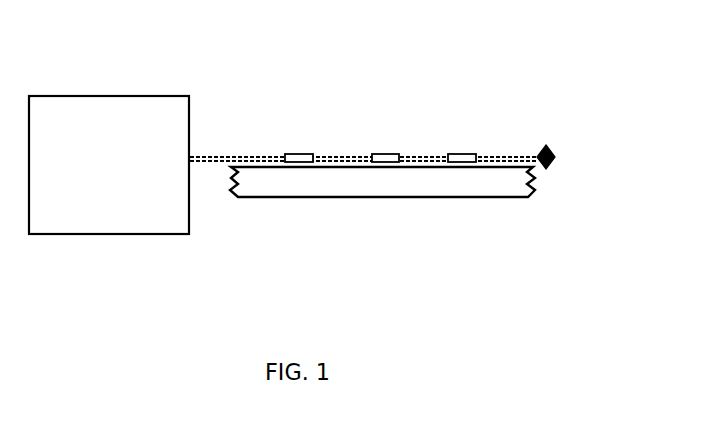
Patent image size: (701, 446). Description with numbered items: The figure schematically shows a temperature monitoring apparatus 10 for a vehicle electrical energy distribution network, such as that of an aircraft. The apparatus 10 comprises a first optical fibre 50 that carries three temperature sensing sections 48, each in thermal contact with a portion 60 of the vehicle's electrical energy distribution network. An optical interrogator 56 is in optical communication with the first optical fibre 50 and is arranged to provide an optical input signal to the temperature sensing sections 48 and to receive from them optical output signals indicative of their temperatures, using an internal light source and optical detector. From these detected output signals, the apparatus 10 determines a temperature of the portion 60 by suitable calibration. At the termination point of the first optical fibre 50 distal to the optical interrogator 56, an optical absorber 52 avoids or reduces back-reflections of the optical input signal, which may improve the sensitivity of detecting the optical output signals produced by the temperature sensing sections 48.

The temperature monitoring apparatus 10 is at (236, 46).
The temperature sensing section 48 is at (300, 153).
The first optical fibre 50 is at (517, 153).
The optical absorber 52 is at (556, 157).
The optical interrogator 56 is at (109, 165).
The portion of the vehicle's electrical energy distribution network 60 is at (503, 197).